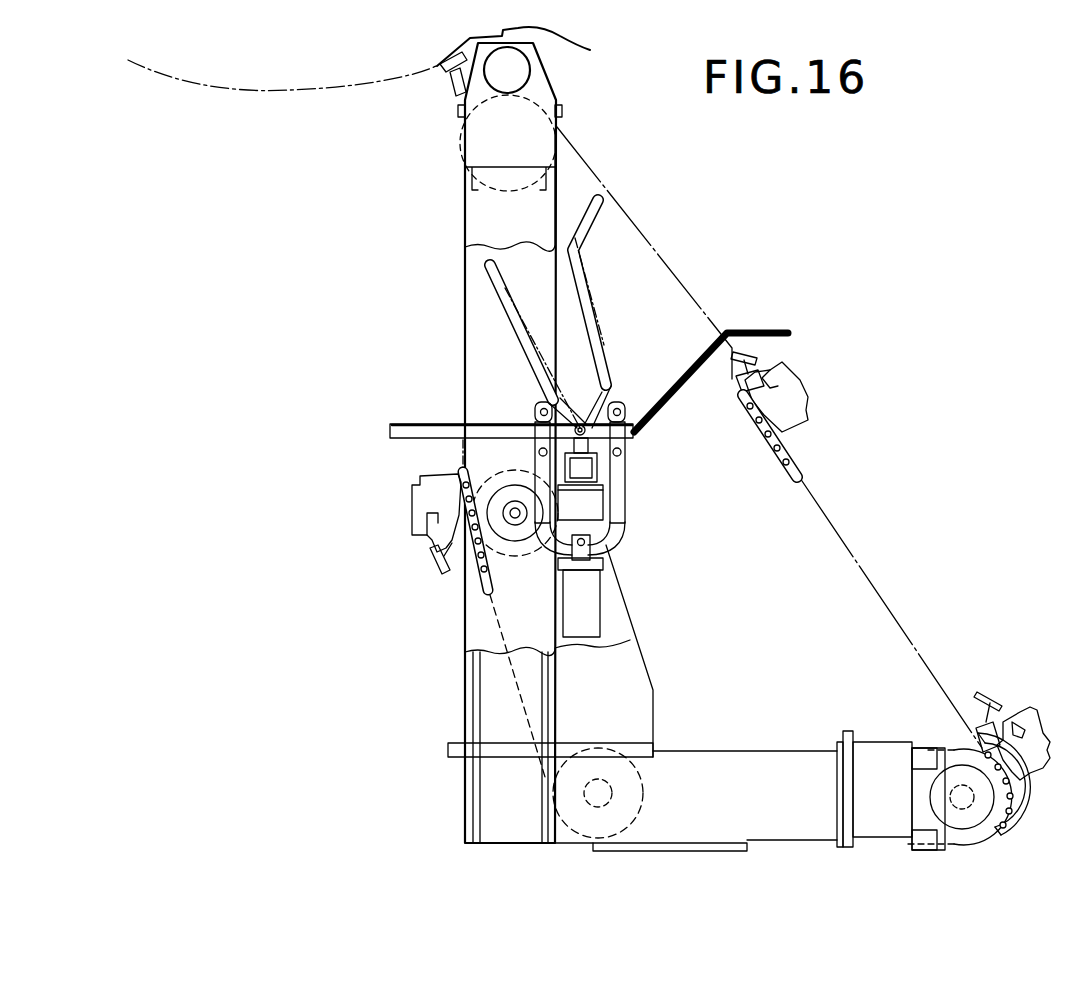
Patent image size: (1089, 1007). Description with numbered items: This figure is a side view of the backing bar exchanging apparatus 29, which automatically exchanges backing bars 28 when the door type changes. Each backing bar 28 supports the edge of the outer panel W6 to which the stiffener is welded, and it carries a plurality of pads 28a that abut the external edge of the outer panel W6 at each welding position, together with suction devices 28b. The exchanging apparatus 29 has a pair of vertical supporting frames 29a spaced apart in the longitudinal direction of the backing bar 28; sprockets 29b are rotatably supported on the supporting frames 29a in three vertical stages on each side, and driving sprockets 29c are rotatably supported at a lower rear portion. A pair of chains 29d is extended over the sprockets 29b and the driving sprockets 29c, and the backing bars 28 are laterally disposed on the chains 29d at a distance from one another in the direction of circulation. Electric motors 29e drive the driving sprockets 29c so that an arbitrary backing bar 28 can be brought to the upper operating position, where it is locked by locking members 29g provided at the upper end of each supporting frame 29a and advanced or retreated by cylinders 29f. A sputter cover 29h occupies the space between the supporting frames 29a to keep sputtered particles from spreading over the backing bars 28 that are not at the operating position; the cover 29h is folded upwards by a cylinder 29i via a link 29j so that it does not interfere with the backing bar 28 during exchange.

The outer panel W6 is at (280, 92).
The backing bar 28 is at (418, 498).
The pads 28a is at (566, 42).
The suction devices 28b is at (443, 72).
The exchanging apparatus 29 is at (460, 656).
The supporting frames 29a is at (483, 303).
The sprockets 29b is at (466, 205).
The driving sprockets 29c is at (968, 751).
The chains 29d is at (838, 532).
The electric motors 29e is at (937, 791).
The cylinders 29f is at (518, 73).
The locking members 29g is at (589, 385).
The sputter cover 29h is at (515, 333).
The cylinder 29i is at (587, 608).
The link 29j is at (545, 508).